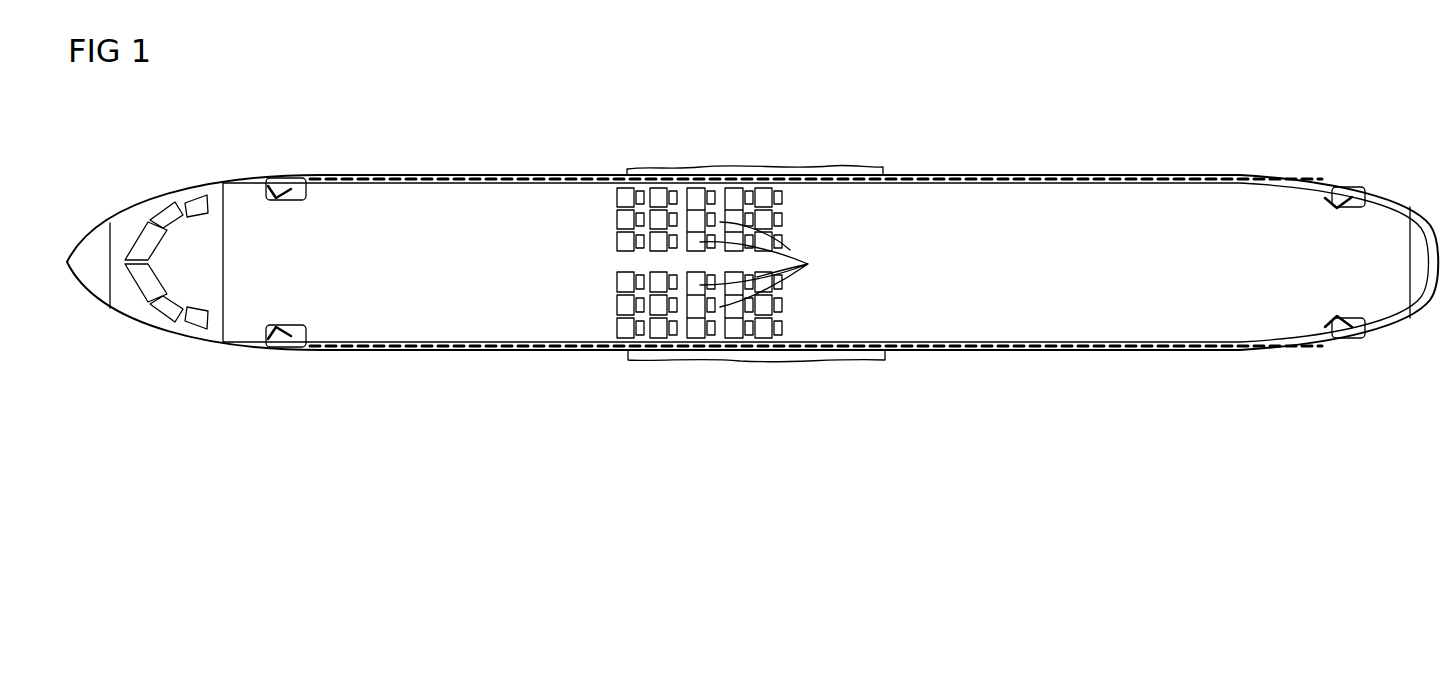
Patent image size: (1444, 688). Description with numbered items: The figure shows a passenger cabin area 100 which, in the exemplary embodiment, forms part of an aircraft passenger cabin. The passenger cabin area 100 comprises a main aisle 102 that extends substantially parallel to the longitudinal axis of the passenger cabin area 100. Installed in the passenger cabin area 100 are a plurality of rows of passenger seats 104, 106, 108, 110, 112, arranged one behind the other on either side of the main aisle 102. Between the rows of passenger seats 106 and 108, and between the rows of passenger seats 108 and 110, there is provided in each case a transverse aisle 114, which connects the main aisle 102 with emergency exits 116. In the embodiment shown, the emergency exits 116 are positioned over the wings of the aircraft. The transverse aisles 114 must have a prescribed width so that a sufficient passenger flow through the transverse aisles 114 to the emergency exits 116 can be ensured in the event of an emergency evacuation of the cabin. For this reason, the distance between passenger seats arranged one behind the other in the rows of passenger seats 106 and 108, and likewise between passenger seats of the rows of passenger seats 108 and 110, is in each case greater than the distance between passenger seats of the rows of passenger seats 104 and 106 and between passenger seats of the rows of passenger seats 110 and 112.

The passenger cabin area 100 is at (757, 102).
The main aisle 102 is at (625, 262).
The row of passenger seats 104 is at (627, 196).
The row of passenger seats 106 is at (657, 330).
The row of passenger seats 108 is at (697, 185).
The row of passenger seats 110 is at (733, 332).
The row of passenger seats 112 is at (765, 196).
The transverse aisle 114 is at (790, 250).
The emergency exit 116 is at (694, 176).